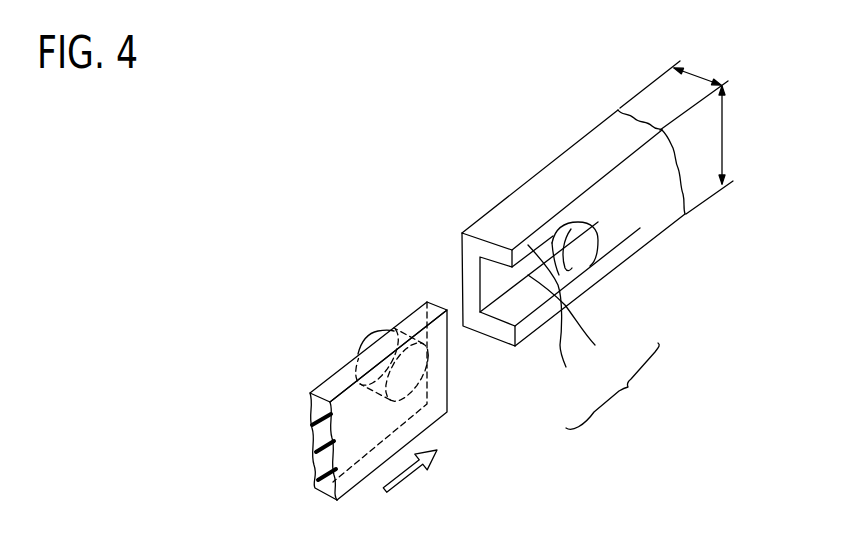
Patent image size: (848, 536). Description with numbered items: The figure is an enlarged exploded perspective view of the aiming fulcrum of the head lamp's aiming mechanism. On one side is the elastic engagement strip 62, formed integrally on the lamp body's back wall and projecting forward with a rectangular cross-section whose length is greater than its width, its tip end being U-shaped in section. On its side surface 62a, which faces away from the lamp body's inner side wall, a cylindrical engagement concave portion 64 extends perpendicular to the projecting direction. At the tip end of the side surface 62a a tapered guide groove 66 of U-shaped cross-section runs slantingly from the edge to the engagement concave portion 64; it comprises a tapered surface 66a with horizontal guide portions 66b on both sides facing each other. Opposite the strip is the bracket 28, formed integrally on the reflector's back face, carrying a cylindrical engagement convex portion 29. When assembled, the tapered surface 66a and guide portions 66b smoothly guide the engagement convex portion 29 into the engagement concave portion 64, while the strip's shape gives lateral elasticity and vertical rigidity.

The elastic engagement strip 62 is at (515, 189).
The side surface 62a is at (652, 231).
The engagement concave portion 64 is at (582, 250).
The guide groove 66 is at (621, 386).
The tapered surface 66a is at (576, 317).
The horizontal guide portions 66b is at (528, 333).
The bracket 28 is at (446, 413).
The engagement convex portion 29 is at (367, 341).